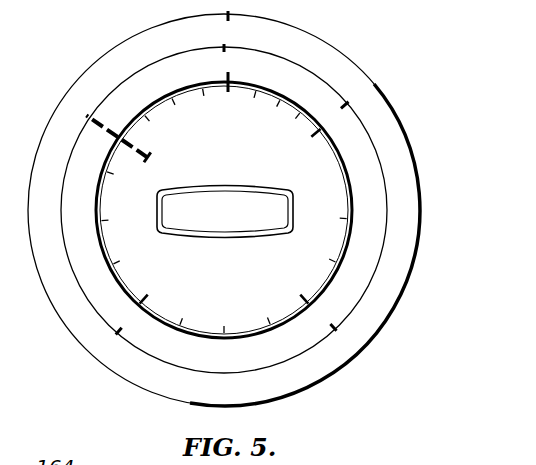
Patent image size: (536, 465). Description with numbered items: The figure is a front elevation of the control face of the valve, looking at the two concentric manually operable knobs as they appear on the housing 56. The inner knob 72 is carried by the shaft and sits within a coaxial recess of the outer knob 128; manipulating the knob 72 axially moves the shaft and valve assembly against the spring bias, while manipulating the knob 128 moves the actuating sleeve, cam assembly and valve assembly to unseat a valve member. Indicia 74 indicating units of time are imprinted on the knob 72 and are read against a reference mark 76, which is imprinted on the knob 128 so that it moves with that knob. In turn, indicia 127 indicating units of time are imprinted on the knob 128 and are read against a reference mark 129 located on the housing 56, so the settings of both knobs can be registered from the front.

The housing 56 is at (358, 68).
The manually operable knob 72 is at (229, 283).
The indicia 74 is at (325, 138).
The reference mark 76 is at (231, 75).
The indicia 127 is at (352, 108).
The manually operable knob 128 is at (372, 190).
The reference mark 129 is at (232, 16).